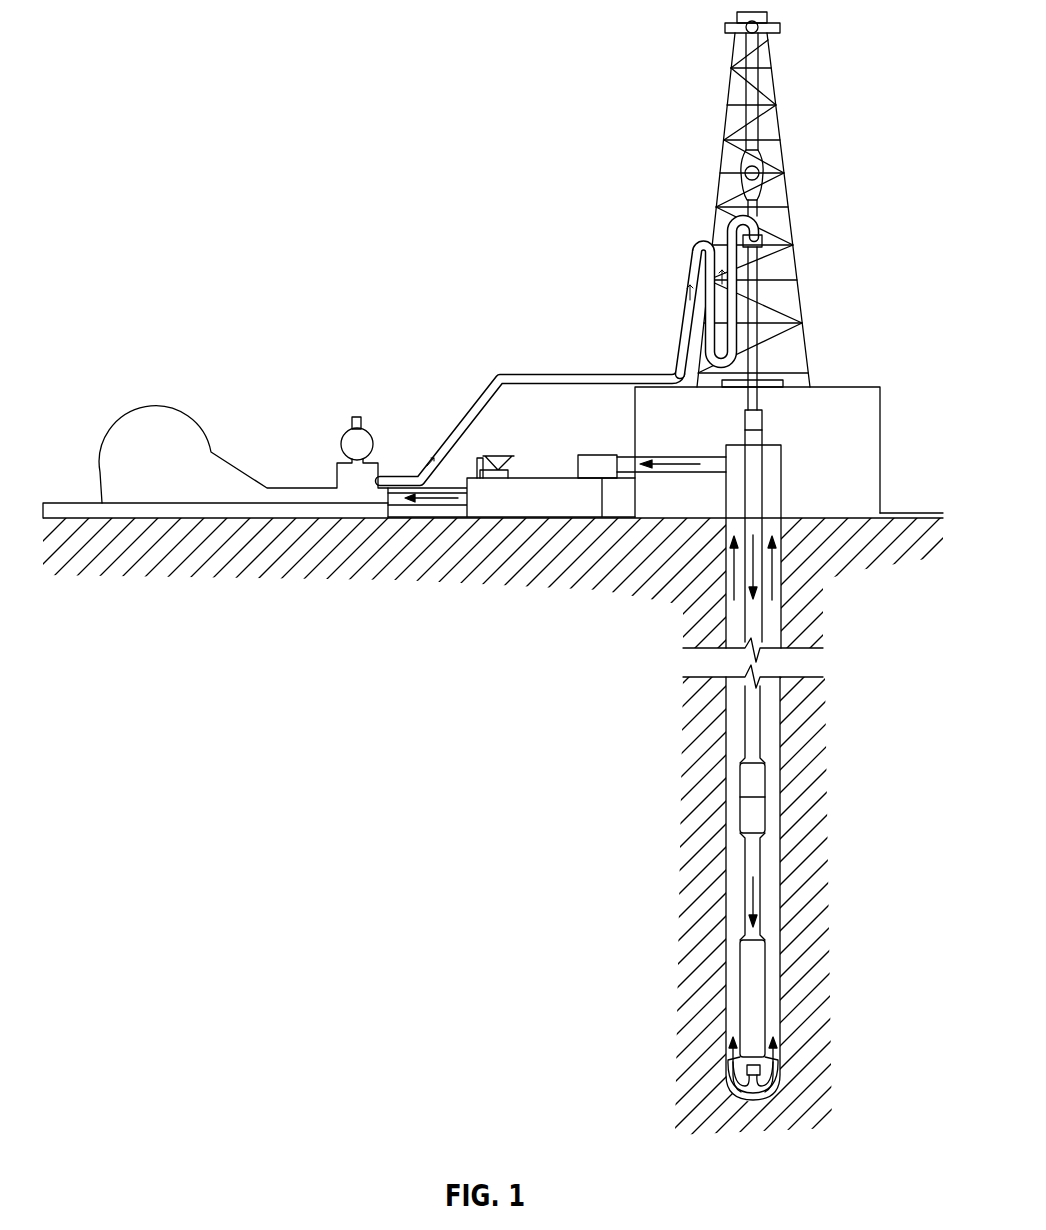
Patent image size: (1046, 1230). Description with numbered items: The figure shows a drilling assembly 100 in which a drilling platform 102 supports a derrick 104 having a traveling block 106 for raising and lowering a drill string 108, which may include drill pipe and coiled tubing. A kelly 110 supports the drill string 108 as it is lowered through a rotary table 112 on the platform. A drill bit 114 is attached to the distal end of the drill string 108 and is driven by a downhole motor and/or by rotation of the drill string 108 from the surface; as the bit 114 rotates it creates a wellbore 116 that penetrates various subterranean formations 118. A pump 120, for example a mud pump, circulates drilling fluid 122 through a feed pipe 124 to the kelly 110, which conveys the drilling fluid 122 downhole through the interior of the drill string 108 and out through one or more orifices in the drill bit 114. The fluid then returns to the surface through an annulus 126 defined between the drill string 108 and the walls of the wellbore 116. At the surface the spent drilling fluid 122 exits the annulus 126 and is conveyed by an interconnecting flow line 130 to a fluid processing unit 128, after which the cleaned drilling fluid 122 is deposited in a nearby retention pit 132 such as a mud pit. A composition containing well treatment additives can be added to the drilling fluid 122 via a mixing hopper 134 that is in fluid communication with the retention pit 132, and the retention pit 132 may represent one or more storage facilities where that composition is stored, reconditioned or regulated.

The drilling assembly 100 is at (146, 102).
The drilling platform 102 is at (880, 460).
The derrick 104 is at (775, 84).
The traveling block 106 is at (764, 168).
The drill string 108 is at (753, 605).
The kelly 110 is at (754, 292).
The rotary table 112 is at (775, 383).
The drill bit 114 is at (768, 1082).
The wellbore 116 is at (783, 725).
The subterranean formations 118 is at (594, 713).
The pump 120 is at (177, 476).
The drilling fluid 122 is at (398, 475).
The feed pipe 124 is at (540, 375).
The annulus 126 is at (773, 862).
The fluid processing unit 128 is at (600, 458).
The flow line 130 is at (710, 475).
The retention pit 132 is at (500, 510).
The mixing hopper 134 is at (500, 457).